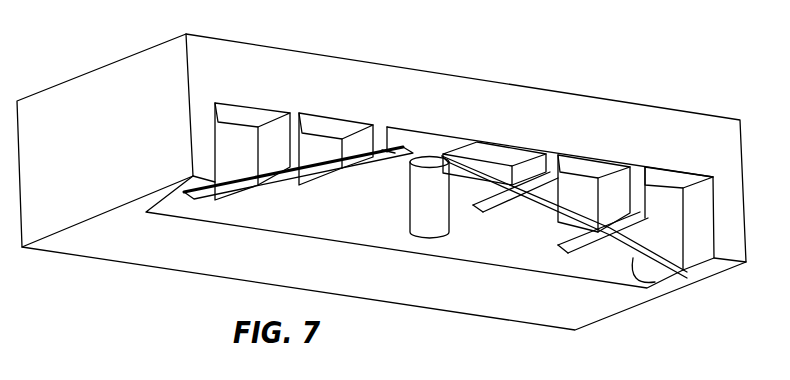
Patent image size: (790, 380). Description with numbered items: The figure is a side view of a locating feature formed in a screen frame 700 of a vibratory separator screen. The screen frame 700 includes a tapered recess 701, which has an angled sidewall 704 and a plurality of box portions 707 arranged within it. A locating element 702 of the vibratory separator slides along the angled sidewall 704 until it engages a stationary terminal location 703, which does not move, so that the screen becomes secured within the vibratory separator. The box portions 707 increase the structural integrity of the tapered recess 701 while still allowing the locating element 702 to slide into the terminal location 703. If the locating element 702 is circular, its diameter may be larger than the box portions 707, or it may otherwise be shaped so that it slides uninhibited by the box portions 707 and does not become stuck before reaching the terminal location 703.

The screen frame 700 is at (566, 69).
The tapered recess 701 is at (498, 242).
The locating element 702 is at (420, 199).
The terminal location 703 is at (430, 150).
The angled sidewall 704 is at (687, 288).
The box portions 707 is at (237, 128).